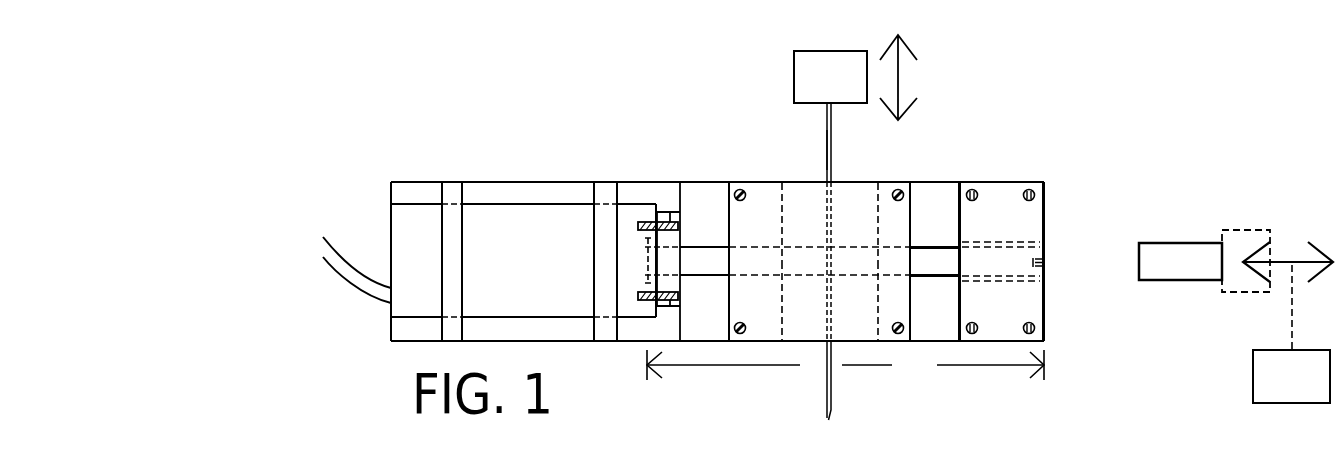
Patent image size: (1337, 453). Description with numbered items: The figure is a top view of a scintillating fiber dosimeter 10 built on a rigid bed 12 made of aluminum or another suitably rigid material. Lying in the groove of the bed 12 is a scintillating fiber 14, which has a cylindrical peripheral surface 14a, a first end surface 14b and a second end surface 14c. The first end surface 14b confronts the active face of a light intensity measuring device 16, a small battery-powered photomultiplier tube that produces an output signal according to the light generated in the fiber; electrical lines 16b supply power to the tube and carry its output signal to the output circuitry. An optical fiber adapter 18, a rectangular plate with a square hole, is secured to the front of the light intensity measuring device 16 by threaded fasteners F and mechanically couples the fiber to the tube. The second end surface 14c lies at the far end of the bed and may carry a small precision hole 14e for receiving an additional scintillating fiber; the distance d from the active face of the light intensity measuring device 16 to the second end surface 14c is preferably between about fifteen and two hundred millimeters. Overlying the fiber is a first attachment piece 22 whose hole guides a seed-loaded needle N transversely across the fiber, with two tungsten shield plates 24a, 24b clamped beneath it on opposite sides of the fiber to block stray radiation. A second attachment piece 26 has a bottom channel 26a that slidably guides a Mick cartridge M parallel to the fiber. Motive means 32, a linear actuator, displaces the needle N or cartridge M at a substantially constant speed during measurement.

The scintillating fiber dosimeter 10 is at (588, 145).
The bed 12 is at (578, 183).
The scintillating fiber 14 is at (707, 262).
The cylindrical peripheral surface 14a is at (932, 267).
The first end surface 14b is at (645, 262).
The second end surface 14c is at (1044, 253).
The precision hole 14e is at (1044, 260).
The light intensity measuring device 16 is at (513, 292).
The electrical lines 16b is at (362, 290).
The optical fiber adapter 18 is at (670, 206).
The first attachment piece 22 is at (758, 230).
The shield plate 24a is at (858, 223).
The shield plate 24b is at (808, 313).
The second attachment piece 26 is at (1003, 223).
The channel 26a is at (1015, 240).
The motive means 32 is at (1063, 219).
The needle N is at (827, 155).
The Mick cartridge M is at (1192, 265).
The threaded fasteners F is at (665, 303).
The distance d is at (845, 367).